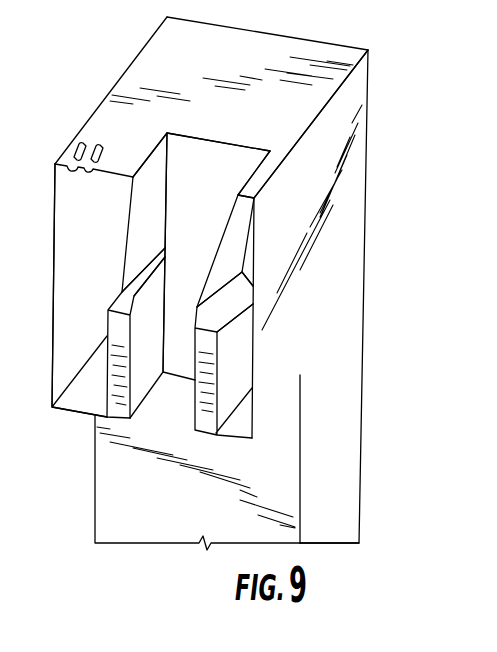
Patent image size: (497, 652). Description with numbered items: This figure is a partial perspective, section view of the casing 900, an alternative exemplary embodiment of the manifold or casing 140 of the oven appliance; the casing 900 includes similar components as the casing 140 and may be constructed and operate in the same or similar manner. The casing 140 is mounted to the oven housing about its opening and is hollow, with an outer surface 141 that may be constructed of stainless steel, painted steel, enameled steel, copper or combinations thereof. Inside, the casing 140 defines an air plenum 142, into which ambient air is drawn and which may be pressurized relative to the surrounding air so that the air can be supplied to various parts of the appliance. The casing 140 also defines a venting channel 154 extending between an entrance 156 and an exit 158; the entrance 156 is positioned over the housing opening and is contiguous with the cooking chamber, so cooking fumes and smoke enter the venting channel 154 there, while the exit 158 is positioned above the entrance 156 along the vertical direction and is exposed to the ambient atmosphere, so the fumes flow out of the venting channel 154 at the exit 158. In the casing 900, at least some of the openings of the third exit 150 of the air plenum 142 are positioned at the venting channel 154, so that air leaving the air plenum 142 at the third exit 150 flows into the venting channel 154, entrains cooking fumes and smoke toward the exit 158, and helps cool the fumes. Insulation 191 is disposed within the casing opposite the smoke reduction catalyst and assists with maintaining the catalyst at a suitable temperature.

The casing 900 is at (237, 283).
The casing 140 is at (347, 244).
The outer surface 141 is at (345, 493).
The air plenum 142 is at (85, 278).
The third exit 150 is at (78, 152).
The venting channel 154 is at (192, 170).
The entrance 156 is at (158, 424).
The exit 158 is at (217, 137).
The insulation 191 is at (110, 370).